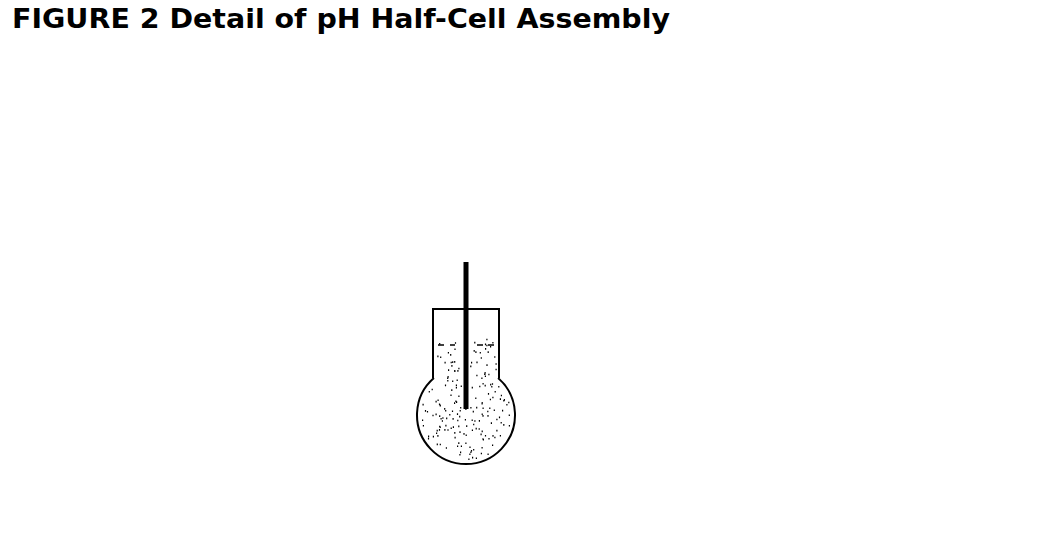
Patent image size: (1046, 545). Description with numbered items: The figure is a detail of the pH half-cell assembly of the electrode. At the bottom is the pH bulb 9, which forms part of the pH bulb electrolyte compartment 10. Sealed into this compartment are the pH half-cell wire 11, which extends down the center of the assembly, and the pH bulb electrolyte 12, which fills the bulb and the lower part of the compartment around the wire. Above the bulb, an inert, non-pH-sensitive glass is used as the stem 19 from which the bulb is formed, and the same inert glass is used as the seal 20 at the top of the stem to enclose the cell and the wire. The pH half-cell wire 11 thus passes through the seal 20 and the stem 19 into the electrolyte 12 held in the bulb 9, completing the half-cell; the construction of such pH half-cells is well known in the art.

The pH bulb 9 is at (518, 457).
The pH bulb electrolyte compartment 10 is at (429, 336).
The pH half-cell wire 11 is at (452, 424).
The pH bulb electrolyte 12 is at (521, 413).
The stem 19 is at (519, 343).
The seal 20 is at (500, 294).